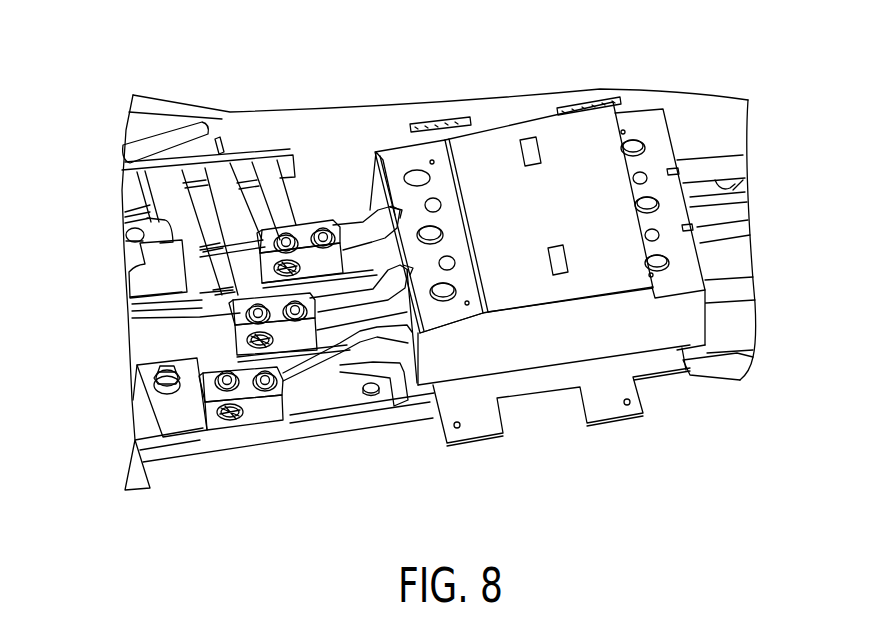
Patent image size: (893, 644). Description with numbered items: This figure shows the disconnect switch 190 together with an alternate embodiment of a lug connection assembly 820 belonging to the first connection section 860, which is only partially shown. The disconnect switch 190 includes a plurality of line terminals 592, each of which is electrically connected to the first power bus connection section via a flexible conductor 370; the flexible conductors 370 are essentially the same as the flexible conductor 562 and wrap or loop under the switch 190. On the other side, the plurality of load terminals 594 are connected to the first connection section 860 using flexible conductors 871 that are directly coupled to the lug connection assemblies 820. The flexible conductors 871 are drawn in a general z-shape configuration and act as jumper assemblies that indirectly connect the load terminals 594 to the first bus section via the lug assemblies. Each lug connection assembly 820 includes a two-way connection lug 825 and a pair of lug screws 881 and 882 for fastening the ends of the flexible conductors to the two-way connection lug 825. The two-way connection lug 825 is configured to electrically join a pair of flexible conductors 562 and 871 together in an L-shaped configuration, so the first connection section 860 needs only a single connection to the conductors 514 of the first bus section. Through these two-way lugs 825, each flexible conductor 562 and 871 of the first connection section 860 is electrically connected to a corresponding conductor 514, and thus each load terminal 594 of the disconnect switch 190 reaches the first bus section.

The disconnect switch 190 is at (578, 152).
The flexible conductor 370 is at (720, 360).
The conductor 514 is at (398, 412).
The flexible conductor 562 is at (166, 183).
The line terminal 592 is at (650, 160).
The load terminal 594 is at (418, 178).
The lug connection assembly 820 is at (250, 415).
The two-way connection lug 825 is at (287, 410).
The first connection section 860 is at (314, 164).
The flexible conductor 871 is at (358, 393).
The lug screw 881 is at (167, 370).
The lug screw 882 is at (228, 372).